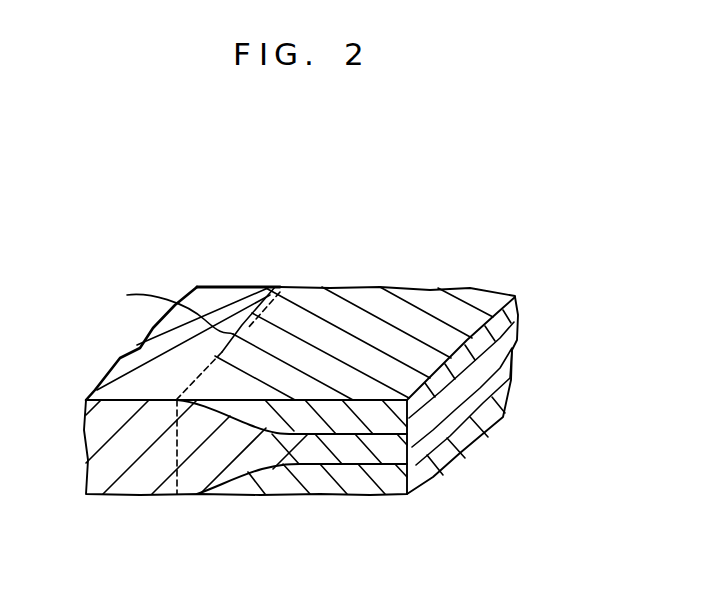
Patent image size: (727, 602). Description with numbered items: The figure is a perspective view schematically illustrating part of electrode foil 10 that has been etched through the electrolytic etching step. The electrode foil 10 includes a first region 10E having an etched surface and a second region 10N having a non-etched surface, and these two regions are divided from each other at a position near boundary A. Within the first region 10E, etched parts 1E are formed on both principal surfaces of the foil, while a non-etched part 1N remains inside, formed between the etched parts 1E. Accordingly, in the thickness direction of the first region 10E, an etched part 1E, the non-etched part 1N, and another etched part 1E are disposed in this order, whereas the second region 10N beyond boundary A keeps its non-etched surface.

The electrode foil 10 is at (433, 222).
The second region 10N is at (285, 280).
The first region 10E is at (510, 283).
The non-etched part 1N is at (113, 465).
The etched part 1E is at (380, 477).
The boundary A is at (168, 306).